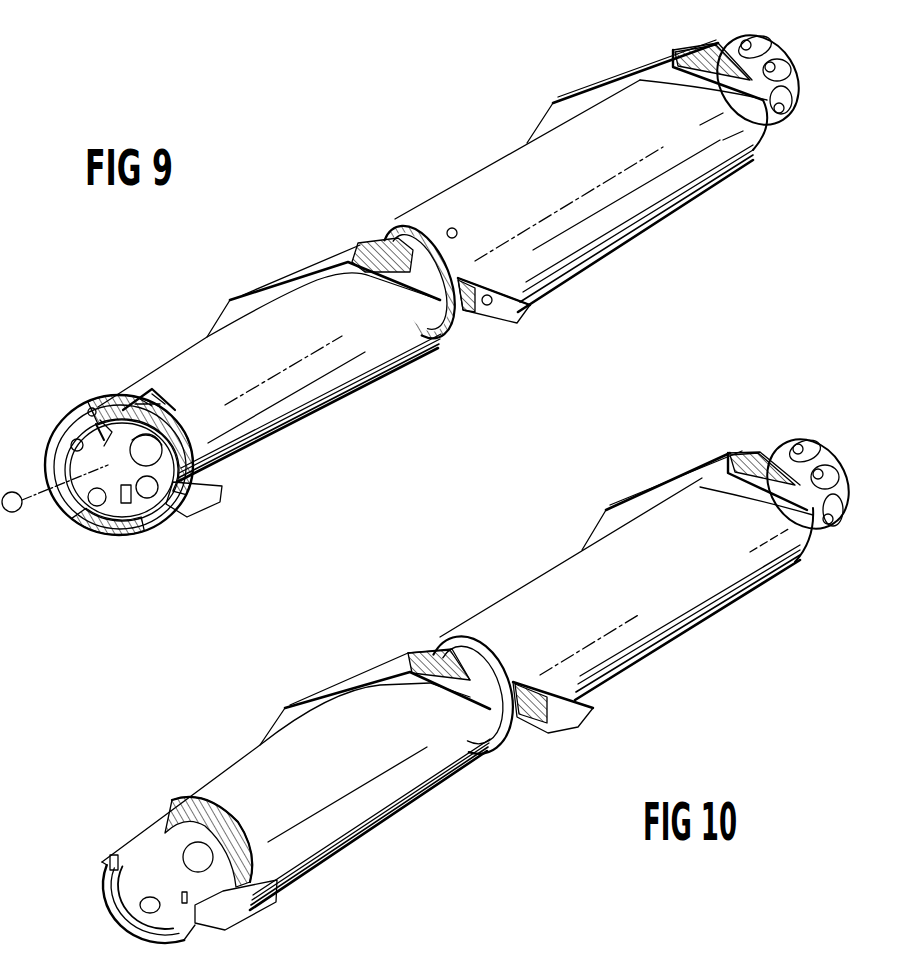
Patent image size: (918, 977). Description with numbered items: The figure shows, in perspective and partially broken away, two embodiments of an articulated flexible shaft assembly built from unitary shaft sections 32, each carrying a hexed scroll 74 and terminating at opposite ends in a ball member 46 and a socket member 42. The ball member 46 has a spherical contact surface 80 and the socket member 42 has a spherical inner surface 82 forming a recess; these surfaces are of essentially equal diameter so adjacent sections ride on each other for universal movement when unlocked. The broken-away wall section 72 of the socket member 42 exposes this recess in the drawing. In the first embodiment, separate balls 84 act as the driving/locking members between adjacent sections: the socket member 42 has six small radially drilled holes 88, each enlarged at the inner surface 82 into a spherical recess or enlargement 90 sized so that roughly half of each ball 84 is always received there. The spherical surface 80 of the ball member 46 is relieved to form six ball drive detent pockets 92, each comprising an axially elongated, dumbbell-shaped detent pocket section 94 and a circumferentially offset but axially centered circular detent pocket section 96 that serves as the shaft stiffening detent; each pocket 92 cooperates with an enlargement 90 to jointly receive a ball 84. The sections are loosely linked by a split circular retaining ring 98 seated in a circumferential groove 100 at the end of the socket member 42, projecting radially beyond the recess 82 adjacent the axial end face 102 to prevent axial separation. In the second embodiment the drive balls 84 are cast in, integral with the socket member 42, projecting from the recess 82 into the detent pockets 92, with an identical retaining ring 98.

In FIG. 9, the shaft section 32 is at (290, 408).
In FIG. 9, the socket member 42 is at (102, 420).
In FIG. 9, the ball member 46 is at (758, 70).
In FIG. 10, the ball member 46 is at (815, 484).
In FIG. 9, the internal insert wall section 72 is at (182, 437).
In FIG. 10, the internal insert wall section 72 is at (233, 836).
In FIG. 9, the hexed scroll 74 is at (240, 306).
In FIG. 10, the hexed scroll 74 is at (287, 722).
In FIG. 9, the spherical contact surface 80 is at (728, 42).
In FIG. 10, the spherical contact surface 80 is at (849, 484).
In FIG. 9, the spherical inner surface 82 is at (114, 528).
In FIG. 10, the spherical inner surface 82 is at (140, 885).
In FIG. 9, the ball 84 is at (90, 503).
In FIG. 10, the ball 84 is at (128, 921).
In FIG. 9, the radially drilled hole 88 is at (90, 410).
In FIG. 9, the spherical recess or enlargement 90 is at (84, 452).
In FIG. 9, the ball drive detent pocket 92 is at (794, 81).
In FIG. 10, the ball drive detent pocket 92 is at (826, 520).
In FIG. 9, the double lobe detent pocket section 94 is at (781, 114).
In FIG. 9, the circular detent pocket section 96 is at (784, 53).
In FIG. 9, the retaining ring 98 is at (163, 397).
In FIG. 10, the retaining ring 98 is at (114, 856).
In FIG. 9, the circumferential groove 100 is at (94, 412).
In FIG. 9, the axial end face 102 is at (88, 527).